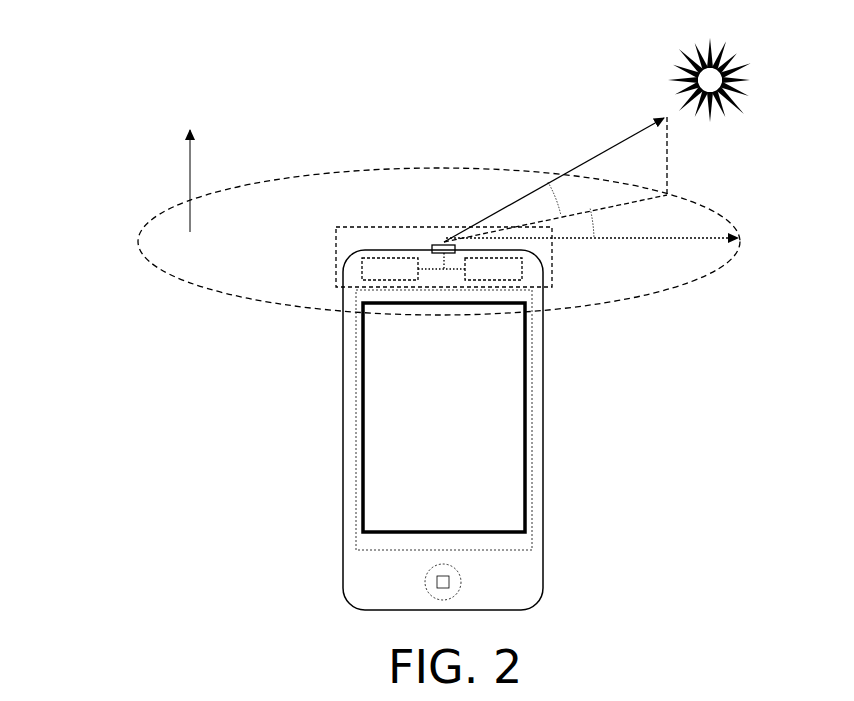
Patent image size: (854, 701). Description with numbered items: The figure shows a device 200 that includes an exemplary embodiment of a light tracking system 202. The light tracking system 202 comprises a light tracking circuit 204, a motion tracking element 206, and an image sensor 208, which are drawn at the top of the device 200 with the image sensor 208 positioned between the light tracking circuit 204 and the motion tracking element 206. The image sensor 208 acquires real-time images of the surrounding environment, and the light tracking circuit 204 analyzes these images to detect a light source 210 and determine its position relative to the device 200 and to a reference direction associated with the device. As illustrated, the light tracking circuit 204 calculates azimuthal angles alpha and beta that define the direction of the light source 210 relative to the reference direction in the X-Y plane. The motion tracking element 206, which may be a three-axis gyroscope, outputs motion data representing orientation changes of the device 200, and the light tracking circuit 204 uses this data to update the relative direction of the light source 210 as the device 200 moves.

The device 200 is at (128, 111).
The light tracking system 202 is at (337, 272).
The light tracking circuit 204 is at (160, 217).
The motion tracking element 206 is at (523, 270).
The image sensor 208 is at (442, 242).
The light source 210 is at (656, 62).